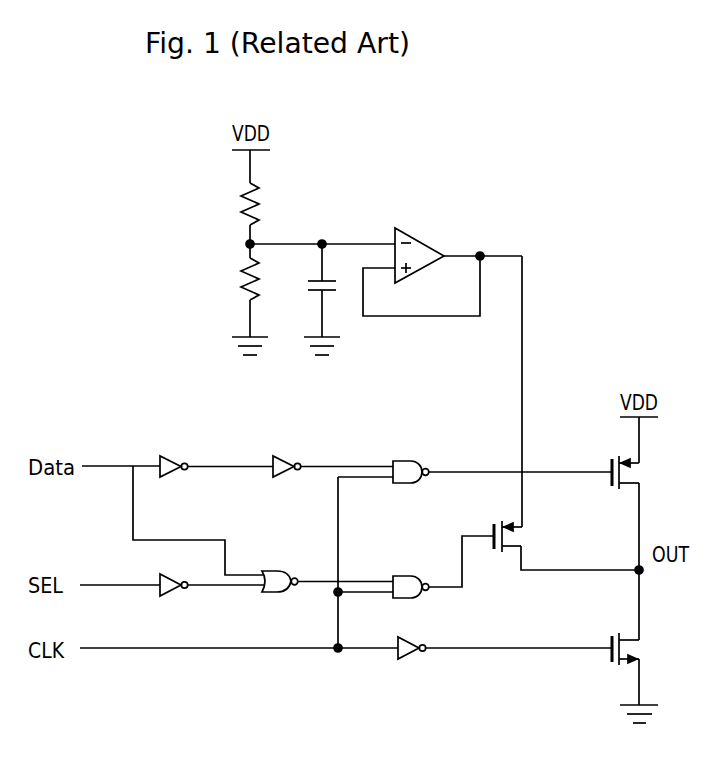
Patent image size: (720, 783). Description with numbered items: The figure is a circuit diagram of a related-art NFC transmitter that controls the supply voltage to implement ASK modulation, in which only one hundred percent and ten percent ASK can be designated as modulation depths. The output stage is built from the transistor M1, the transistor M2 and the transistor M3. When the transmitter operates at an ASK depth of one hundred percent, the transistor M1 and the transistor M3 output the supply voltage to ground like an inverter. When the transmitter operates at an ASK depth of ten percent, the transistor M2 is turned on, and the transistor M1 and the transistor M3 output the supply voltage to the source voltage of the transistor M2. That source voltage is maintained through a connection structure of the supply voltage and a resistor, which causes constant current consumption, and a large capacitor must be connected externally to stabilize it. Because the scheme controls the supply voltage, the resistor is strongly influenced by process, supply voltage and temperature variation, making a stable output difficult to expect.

The transistor M1 is at (641, 473).
The transistor M2 is at (523, 538).
The transistor M3 is at (641, 649).